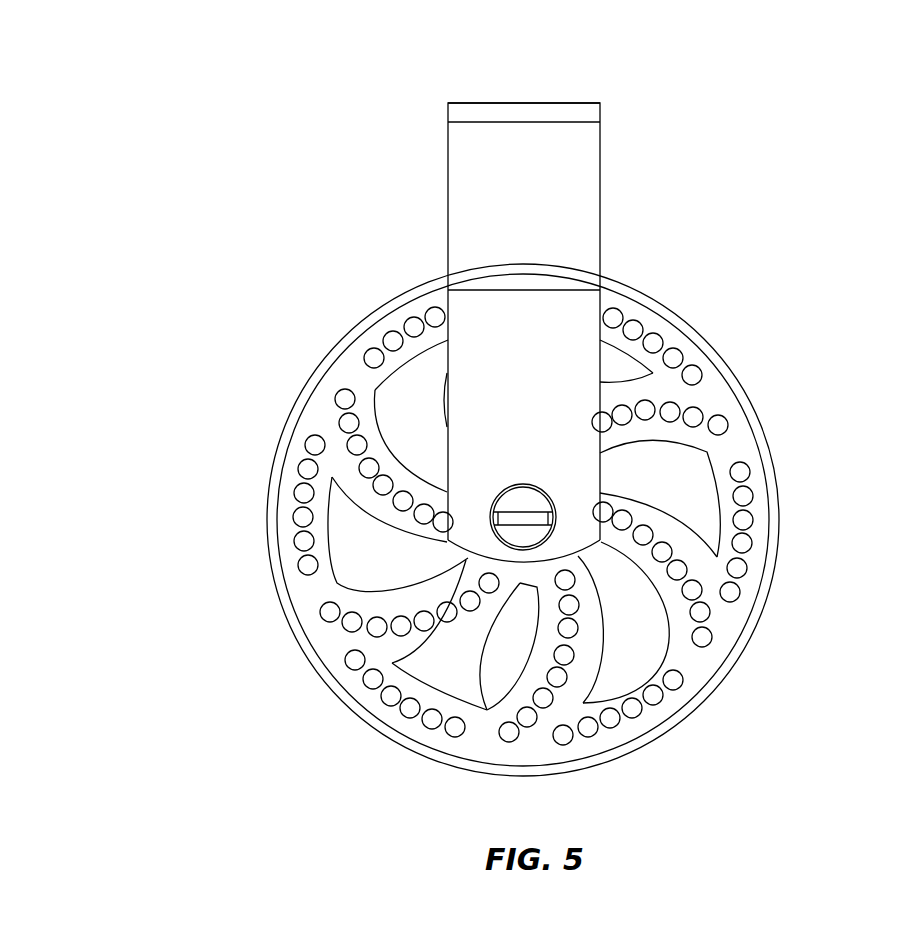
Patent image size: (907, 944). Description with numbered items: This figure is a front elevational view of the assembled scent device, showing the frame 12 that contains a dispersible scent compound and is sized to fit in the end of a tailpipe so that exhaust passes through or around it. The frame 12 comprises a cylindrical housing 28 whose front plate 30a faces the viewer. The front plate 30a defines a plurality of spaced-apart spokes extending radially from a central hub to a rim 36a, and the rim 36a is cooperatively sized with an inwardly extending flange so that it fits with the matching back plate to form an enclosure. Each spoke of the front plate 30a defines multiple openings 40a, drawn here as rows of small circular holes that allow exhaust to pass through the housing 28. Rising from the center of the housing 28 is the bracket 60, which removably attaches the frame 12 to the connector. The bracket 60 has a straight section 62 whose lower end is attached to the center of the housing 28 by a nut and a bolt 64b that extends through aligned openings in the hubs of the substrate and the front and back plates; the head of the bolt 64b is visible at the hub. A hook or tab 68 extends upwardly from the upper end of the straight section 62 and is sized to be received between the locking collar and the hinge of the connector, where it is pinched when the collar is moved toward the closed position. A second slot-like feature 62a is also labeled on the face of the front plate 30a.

The frame 12 is at (302, 648).
The cylindrical housing 28 is at (708, 340).
The front plate 30a is at (663, 730).
The rim 36a is at (733, 630).
The openings 40a is at (383, 487).
The bracket 60 is at (604, 166).
The straight section 62 is at (483, 393).
The slot 62a is at (667, 530).
The bolt 64b is at (523, 535).
The hook or tab 68 is at (527, 100).